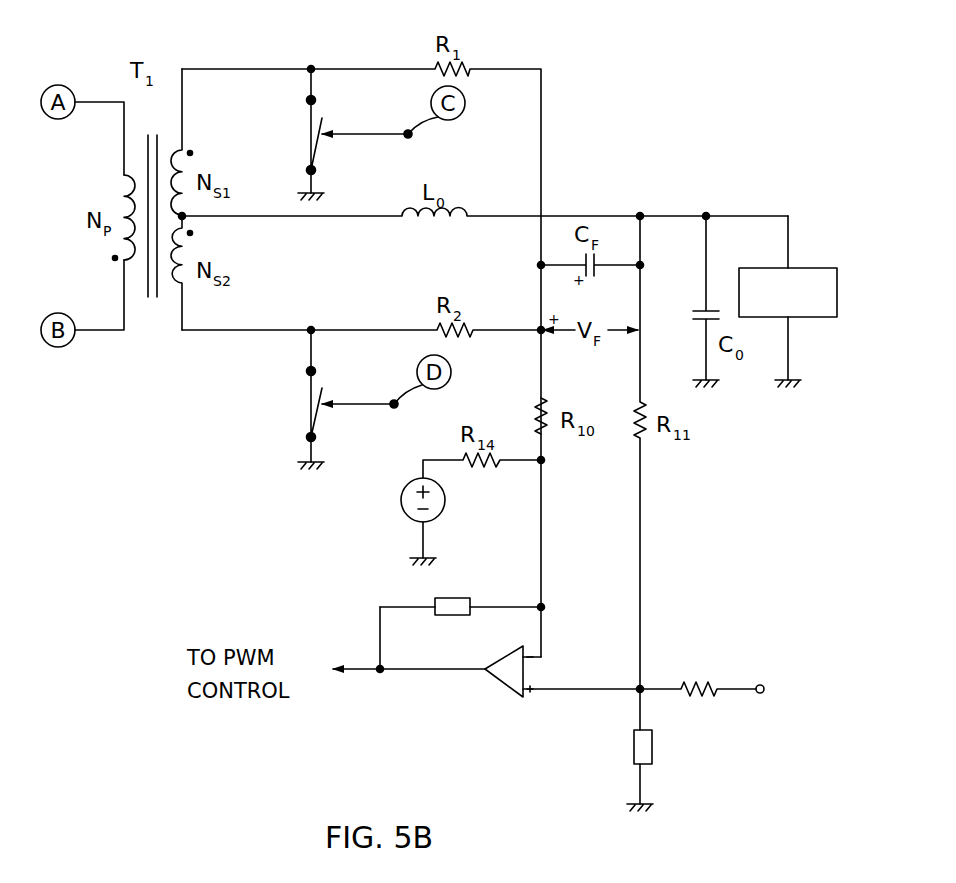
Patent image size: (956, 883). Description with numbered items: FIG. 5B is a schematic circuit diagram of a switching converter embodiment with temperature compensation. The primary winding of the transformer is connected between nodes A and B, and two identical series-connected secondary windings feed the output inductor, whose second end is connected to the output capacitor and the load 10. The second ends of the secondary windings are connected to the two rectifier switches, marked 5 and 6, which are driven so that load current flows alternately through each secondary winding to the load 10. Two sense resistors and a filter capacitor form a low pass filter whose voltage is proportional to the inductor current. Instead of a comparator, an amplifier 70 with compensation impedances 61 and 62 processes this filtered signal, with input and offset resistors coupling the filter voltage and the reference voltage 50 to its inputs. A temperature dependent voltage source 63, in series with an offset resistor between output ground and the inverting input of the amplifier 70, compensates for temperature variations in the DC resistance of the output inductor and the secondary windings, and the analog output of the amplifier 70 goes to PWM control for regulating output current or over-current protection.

The first switch S1 5 is at (313, 68).
The second switch S2 6 is at (313, 329).
The load 10 is at (822, 268).
The reference voltage 50 is at (773, 655).
The compensation impedance 61 is at (435, 600).
The compensation impedance 62 is at (657, 753).
The temperature dependent voltage source 63 is at (447, 501).
The amplifier 70 is at (495, 677).